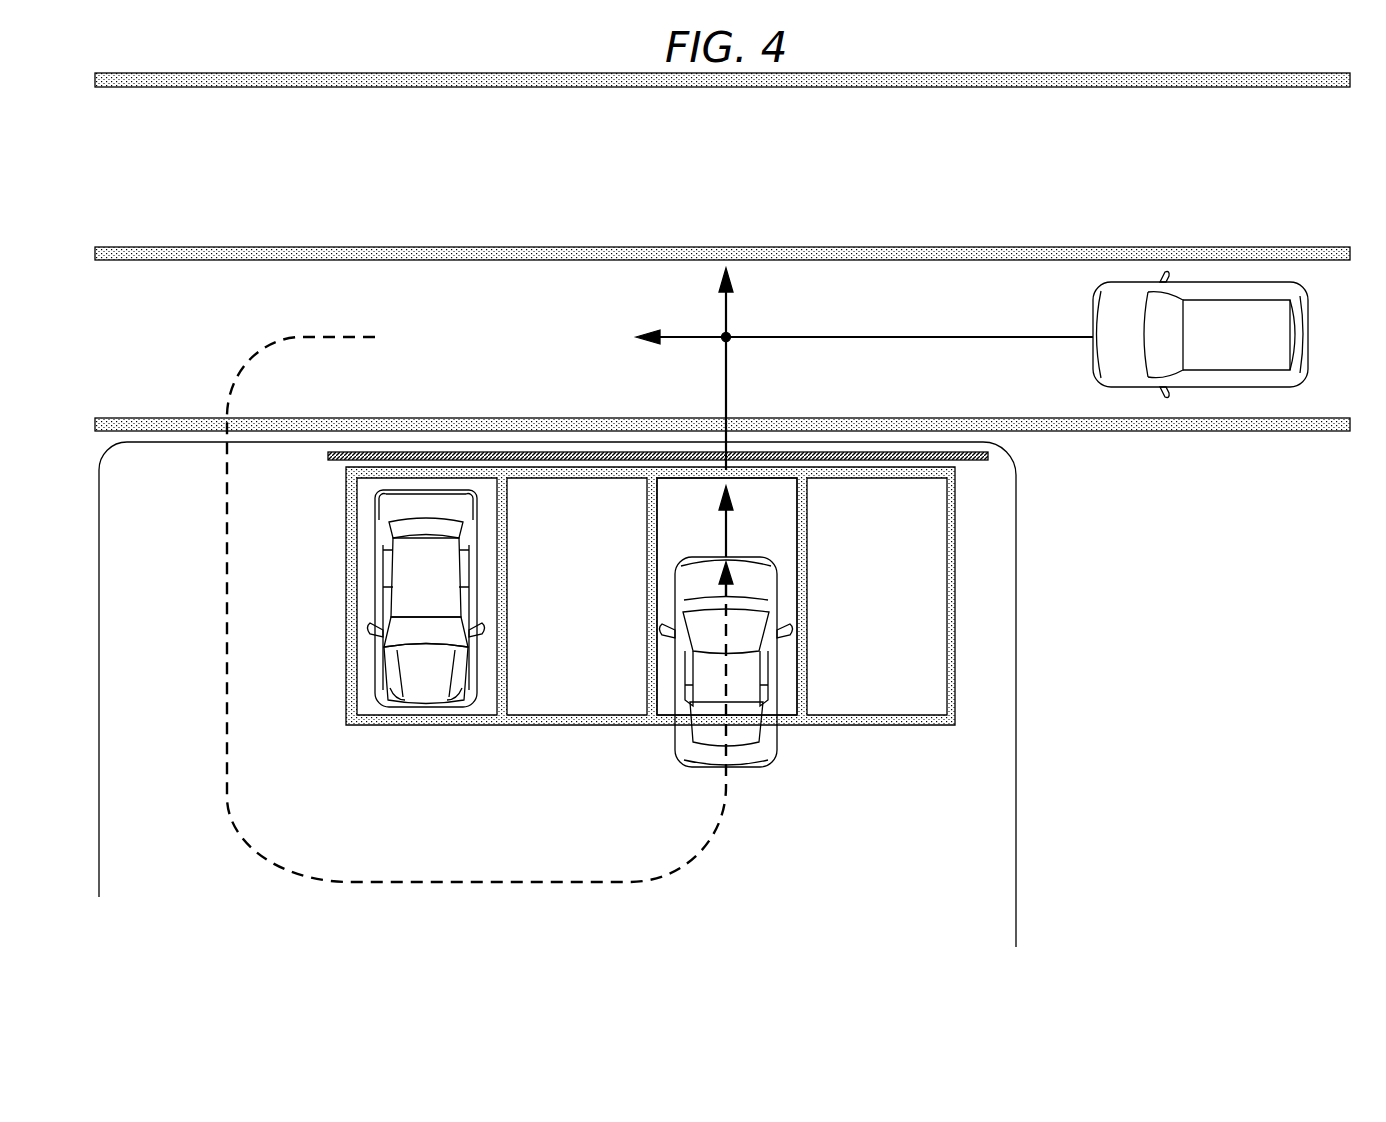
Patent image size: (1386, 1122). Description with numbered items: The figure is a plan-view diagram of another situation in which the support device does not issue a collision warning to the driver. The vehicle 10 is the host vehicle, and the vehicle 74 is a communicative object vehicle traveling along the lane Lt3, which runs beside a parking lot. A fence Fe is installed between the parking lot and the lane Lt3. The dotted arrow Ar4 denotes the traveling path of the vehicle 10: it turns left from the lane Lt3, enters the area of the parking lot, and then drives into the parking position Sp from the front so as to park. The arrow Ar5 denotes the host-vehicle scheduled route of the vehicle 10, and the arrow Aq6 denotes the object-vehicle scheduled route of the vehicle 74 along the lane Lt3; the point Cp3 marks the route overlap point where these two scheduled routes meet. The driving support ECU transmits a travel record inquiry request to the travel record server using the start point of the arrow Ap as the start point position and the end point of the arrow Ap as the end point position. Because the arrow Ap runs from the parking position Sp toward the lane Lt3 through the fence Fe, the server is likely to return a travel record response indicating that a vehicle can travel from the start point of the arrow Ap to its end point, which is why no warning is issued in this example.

The vehicle 10 is at (697, 768).
The vehicle 74 is at (1103, 378).
The lane Lt3 is at (1342, 336).
The fence Fe is at (968, 461).
The parking position Sp is at (784, 729).
The arrow Ap is at (729, 540).
The dotted arrow Ar4 is at (449, 881).
The arrow Ar5 is at (723, 398).
The arrow Aq6 is at (826, 336).
The point Cp3 is at (729, 341).